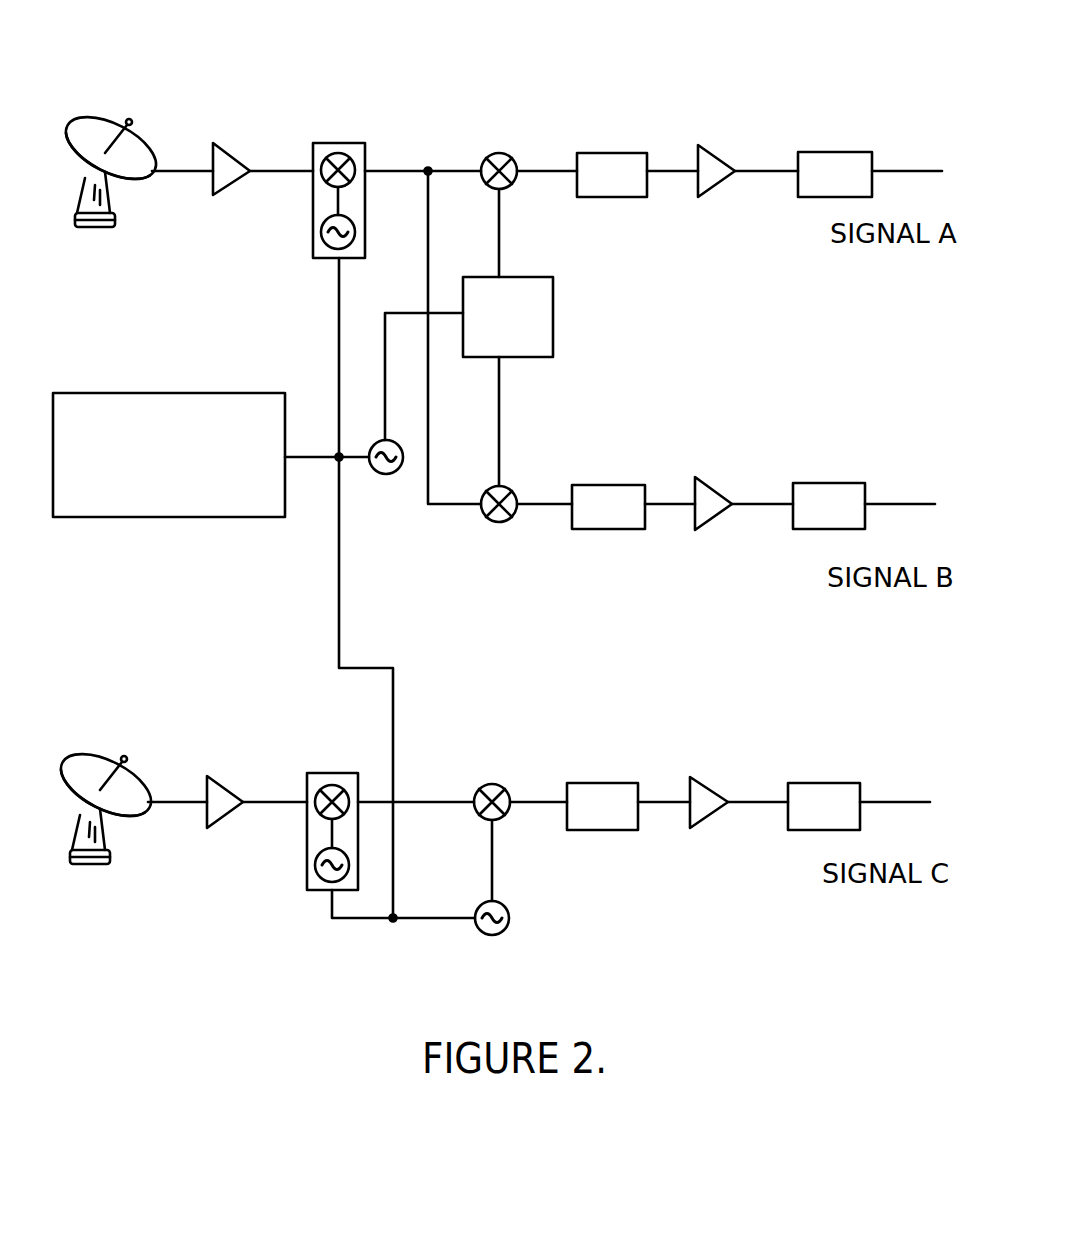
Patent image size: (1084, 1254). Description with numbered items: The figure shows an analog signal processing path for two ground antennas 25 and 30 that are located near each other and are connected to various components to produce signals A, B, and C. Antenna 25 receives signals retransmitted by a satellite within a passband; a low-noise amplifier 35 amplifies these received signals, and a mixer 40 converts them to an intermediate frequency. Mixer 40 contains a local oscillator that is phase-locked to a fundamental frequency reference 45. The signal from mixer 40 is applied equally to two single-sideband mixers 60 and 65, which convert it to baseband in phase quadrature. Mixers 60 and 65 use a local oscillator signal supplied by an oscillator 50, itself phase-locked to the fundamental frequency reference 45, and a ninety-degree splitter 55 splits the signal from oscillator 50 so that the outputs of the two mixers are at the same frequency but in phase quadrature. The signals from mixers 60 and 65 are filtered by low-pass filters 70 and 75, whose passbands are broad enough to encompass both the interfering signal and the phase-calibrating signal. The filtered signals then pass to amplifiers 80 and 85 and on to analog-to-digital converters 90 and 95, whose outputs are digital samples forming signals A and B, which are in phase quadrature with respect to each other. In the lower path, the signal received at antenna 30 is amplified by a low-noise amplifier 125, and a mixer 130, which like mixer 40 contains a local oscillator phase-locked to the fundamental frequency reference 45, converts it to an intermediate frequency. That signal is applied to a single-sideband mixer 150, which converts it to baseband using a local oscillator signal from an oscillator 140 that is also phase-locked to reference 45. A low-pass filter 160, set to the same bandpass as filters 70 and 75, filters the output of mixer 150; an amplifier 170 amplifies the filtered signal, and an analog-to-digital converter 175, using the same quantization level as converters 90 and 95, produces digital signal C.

The antenna 25 is at (90, 113).
The antenna 30 is at (80, 748).
The low-noise amplifier 35 is at (215, 143).
The mixer 40 is at (347, 143).
The fundamental frequency reference 45 is at (107, 393).
The oscillator 50 is at (378, 477).
The 90-degree splitter 55 is at (553, 313).
The single-sideband mixer 60 is at (497, 152).
The single-sideband mixer 65 is at (488, 522).
The low-pass filter 70 is at (603, 153).
The low-pass filter 75 is at (600, 485).
The amplifier 80 is at (718, 145).
The amplifier 85 is at (708, 477).
The analog-to-digital converter 90 is at (817, 152).
The analog-to-digital converter 95 is at (810, 483).
The low-noise amplifier 125 is at (212, 776).
The mixer 130 is at (332, 773).
The oscillator 140 is at (505, 932).
The single-sideband mixer 150 is at (484, 785).
The low-pass filter 160 is at (595, 783).
The amplifier 170 is at (705, 777).
The analog-to-digital converter 175 is at (805, 783).